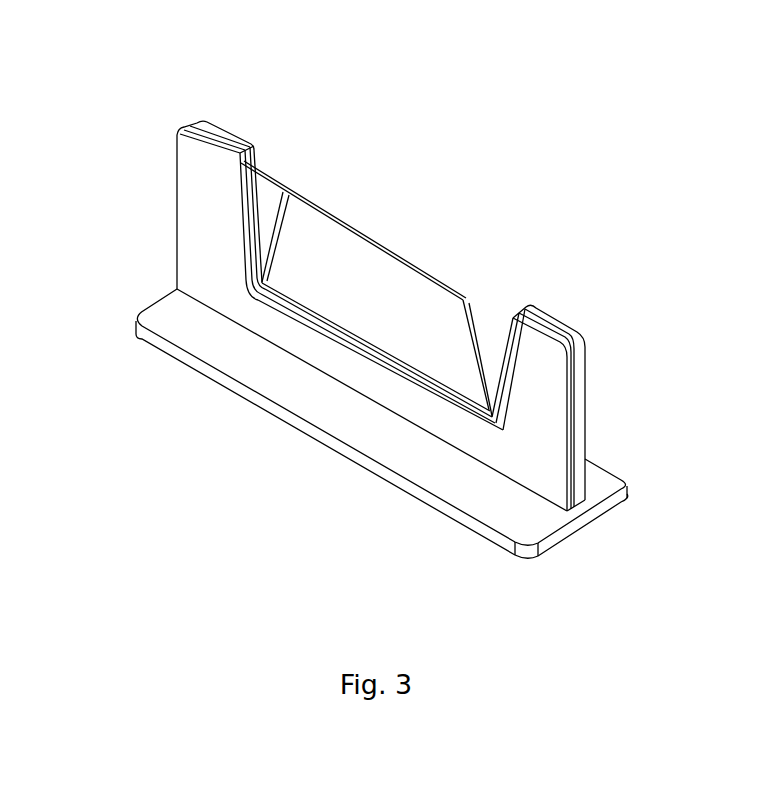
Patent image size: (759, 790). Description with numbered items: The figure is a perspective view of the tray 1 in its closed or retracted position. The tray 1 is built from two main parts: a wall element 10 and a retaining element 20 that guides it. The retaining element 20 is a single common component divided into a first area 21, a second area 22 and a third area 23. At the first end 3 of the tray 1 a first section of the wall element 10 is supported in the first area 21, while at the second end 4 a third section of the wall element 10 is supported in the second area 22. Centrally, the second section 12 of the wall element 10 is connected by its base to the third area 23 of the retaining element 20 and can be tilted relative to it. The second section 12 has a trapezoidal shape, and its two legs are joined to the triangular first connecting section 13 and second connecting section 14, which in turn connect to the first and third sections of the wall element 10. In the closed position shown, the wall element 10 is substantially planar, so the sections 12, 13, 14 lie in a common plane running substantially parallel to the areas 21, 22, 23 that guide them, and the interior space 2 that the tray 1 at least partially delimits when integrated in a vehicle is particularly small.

The tray 1 is at (158, 128).
The interior space 2 is at (466, 284).
The first end 3 is at (553, 357).
The second end 4 is at (213, 157).
The wall element 10 is at (358, 210).
The second section 12 is at (403, 287).
The first connecting section 13 is at (483, 313).
The second connecting section 14 is at (263, 192).
The retaining element 20 is at (598, 350).
The first area 21 is at (542, 381).
The second area 22 is at (217, 211).
The third area 23 is at (337, 363).